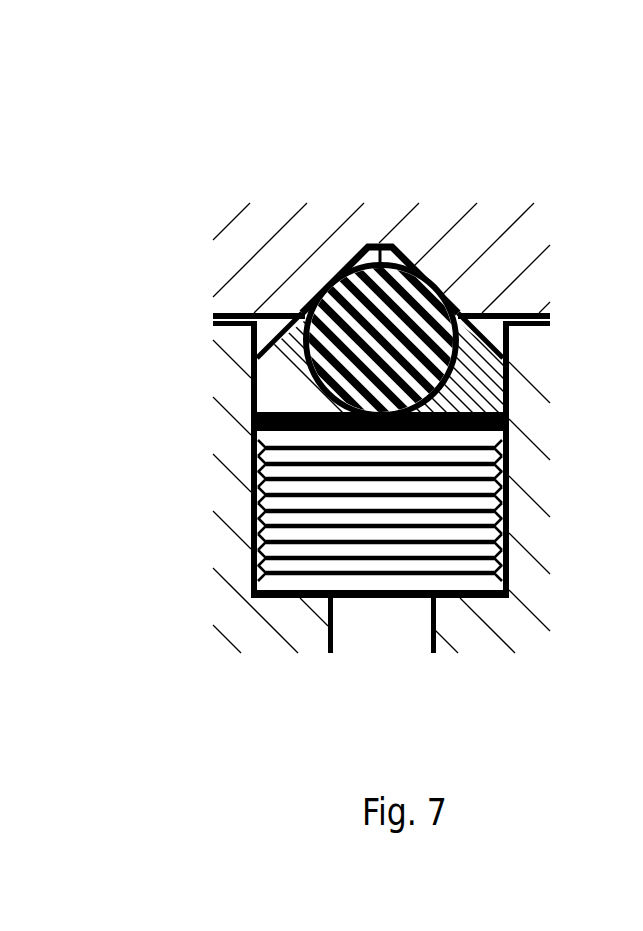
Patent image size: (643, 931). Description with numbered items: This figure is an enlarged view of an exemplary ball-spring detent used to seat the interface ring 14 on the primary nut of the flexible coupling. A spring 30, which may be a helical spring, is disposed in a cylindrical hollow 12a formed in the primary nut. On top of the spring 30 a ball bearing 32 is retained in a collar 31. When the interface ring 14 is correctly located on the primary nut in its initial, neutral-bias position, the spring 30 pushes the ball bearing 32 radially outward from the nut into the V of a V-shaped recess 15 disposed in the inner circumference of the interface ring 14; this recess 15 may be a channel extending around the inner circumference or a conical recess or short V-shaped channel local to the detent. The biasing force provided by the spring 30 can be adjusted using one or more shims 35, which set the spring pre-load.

The interface ring 14 is at (292, 253).
The V-shaped recess 15 is at (368, 244).
The ball bearing 32 is at (420, 335).
The collar 31 is at (255, 382).
The spring 30 is at (303, 486).
The cylindrical hollow 12a is at (253, 573).
The shim 35 is at (505, 588).